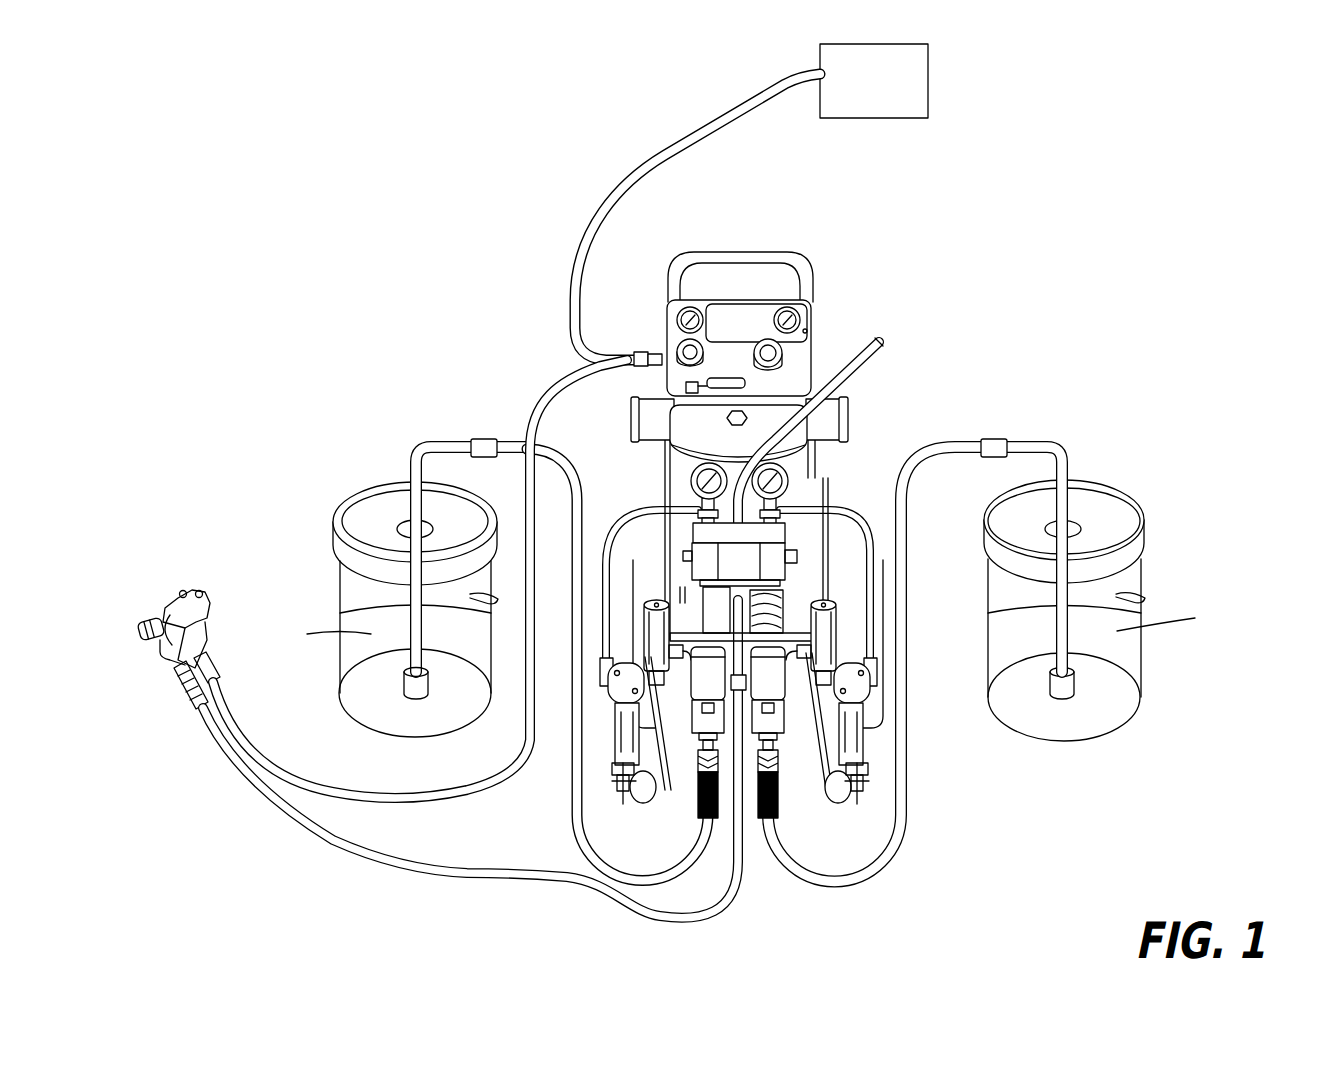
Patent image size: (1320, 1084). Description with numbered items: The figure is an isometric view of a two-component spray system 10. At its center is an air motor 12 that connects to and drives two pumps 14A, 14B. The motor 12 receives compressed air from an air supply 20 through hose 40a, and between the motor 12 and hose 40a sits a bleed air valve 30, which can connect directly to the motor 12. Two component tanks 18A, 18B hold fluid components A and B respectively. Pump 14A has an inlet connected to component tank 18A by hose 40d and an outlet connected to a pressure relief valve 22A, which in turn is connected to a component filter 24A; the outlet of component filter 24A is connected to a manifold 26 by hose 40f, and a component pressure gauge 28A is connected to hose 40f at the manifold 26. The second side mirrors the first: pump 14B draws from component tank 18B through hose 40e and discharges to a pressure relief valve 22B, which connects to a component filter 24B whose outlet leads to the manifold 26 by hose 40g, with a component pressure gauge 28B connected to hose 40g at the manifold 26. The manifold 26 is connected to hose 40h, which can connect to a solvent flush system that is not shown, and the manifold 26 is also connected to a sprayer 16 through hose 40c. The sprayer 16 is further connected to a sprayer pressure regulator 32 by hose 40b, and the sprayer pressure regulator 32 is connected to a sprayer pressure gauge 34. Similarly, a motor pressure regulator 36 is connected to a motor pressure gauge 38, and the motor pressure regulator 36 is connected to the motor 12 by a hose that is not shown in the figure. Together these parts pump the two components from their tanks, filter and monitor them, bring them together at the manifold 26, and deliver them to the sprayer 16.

The spray system 10 is at (272, 184).
The motor 12 is at (788, 417).
The pump 14A is at (700, 740).
The pump 14B is at (792, 740).
The sprayer 16 is at (170, 598).
The component tank 18A is at (387, 517).
The component tank 18B is at (1107, 522).
The air supply 20 is at (928, 77).
The pressure relief valve 22A is at (643, 598).
The pressure relief valve 22B is at (837, 602).
The component filter 24A is at (628, 752).
The component filter 24B is at (853, 736).
The manifold 26 is at (707, 567).
The component pressure gauge 28A is at (693, 475).
The component pressure gauge 28B is at (773, 470).
The bleed air valve 30 is at (662, 342).
The sprayer pressure regulator 32 is at (686, 346).
The sprayer pressure gauge 34 is at (696, 308).
The motor pressure regulator 36 is at (770, 348).
The motor pressure gauge 38 is at (792, 309).
The hose 40a is at (659, 148).
The hose 40b is at (523, 731).
The hose 40c is at (578, 884).
The hose 40d is at (568, 786).
The hose 40e is at (893, 850).
The hose 40f is at (630, 536).
The hose 40g is at (853, 530).
The hose 40h is at (882, 337).